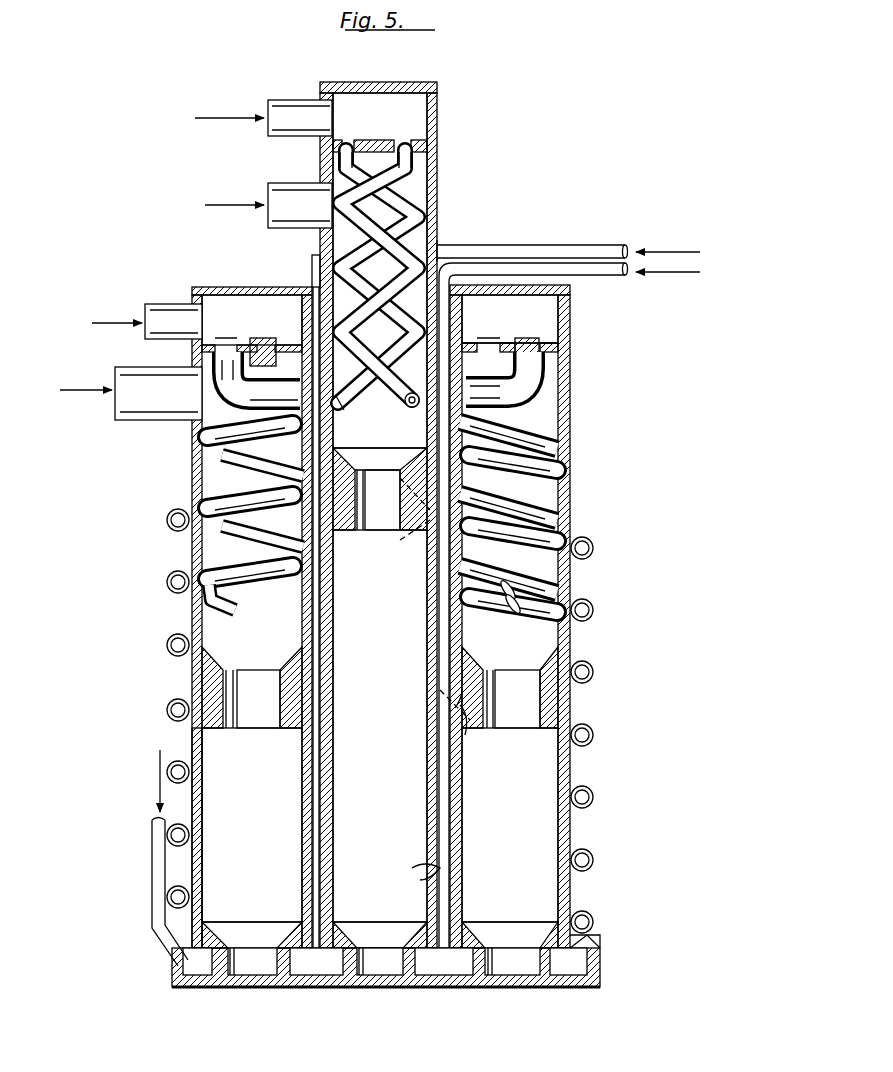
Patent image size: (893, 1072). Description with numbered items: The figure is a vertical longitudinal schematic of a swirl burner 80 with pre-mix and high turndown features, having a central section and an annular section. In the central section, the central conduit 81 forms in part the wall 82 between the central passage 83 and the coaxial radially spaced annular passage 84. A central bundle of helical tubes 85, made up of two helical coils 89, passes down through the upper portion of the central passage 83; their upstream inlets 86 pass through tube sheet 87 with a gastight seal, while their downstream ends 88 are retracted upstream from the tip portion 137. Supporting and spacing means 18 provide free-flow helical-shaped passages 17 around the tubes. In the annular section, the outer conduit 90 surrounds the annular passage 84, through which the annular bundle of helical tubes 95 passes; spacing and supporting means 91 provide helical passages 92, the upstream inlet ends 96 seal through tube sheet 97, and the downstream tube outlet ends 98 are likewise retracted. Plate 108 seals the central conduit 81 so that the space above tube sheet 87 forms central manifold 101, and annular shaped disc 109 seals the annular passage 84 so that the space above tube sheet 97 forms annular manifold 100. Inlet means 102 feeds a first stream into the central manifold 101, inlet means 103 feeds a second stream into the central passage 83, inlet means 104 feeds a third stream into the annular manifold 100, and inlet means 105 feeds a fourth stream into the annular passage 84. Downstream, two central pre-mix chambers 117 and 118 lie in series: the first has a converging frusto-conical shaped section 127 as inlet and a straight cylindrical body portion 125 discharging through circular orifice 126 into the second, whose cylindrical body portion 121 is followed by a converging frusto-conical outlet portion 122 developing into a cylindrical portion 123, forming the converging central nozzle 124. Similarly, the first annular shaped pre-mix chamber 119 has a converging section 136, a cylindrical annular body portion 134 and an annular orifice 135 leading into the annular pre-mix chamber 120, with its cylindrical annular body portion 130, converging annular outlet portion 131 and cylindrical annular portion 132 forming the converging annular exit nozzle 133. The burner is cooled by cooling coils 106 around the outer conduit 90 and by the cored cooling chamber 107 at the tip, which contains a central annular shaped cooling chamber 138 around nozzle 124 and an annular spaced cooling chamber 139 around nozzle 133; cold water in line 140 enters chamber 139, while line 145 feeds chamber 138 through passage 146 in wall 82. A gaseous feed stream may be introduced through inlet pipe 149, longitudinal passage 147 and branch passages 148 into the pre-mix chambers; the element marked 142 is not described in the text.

The free-flow helical-shaped passages 17 is at (430, 205).
The supporting and spacing means 18 is at (425, 170).
The burner 80 is at (570, 405).
The central conduit 81 is at (437, 235).
The wall 82 is at (427, 727).
The central passage 83 is at (398, 138).
The annular passage 84 is at (200, 425).
The central bundle of helical tubes 85 is at (340, 150).
The upstream inlets 86 is at (348, 138).
The tube sheet 87 is at (427, 150).
The downstream ends 88 is at (410, 410).
The helical coils 89 is at (345, 215).
The outer conduit 90 is at (192, 600).
The spacing and supporting means 91 is at (558, 475).
The free-flow helical passages 92 is at (570, 415).
The annular bundle of helical tubes 95 is at (200, 455).
The upstream inlet ends 96 is at (268, 338).
The tube sheet 97 is at (210, 350).
The downstream tube outlet ends 98 is at (240, 600).
The annular manifold 100 is at (228, 295).
The central manifold 101 is at (427, 108).
The inlet means 102 is at (280, 100).
The inlet means 103 is at (268, 195).
The inlet means 104 is at (162, 305).
The inlet means 105 is at (130, 367).
The cooling coils 106 is at (167, 710).
The cored cooling chamber 107 is at (592, 940).
The plate 108 is at (395, 90).
The annular shaped disc 109 is at (192, 287).
The first central pre-mix chamber 117 is at (380, 525).
The central pre-mix chamber 118 is at (395, 666).
The first annular shaped pre-mix chamber 119 is at (388, 699).
The annular shaped pre-mix chamber 120 is at (380, 825).
The coaxial cylindrical body portion 121 is at (320, 778).
The converging frusto-conical outlet portion 122 is at (437, 918).
The normal cylindrical portion 123 is at (380, 978).
The converging central nozzle 124 is at (343, 922).
The straight coaxial cylindrical body portion 125 is at (370, 540).
The circular orifice 126 is at (395, 570).
The converging frusto-conical shaped section 127 is at (382, 500).
The cylindrical annular body portion 130 is at (202, 845).
The converging frusto-conical shaped annular outlet portion 131 is at (222, 930).
The normal cylindrical annular portion 132 is at (250, 978).
The converging annular exit nozzle 133 is at (258, 922).
The cylindrical annular body portion 134 is at (242, 740).
The annular orifice 135 is at (283, 735).
The converging frusto-conical shaped section 136 is at (225, 655).
The tip portion 137 is at (180, 985).
The central annular shaped cooling chamber 138 is at (310, 978).
The annular spaced cooling chamber 139 is at (200, 975).
The line 140 is at (155, 778).
The base corner 142 is at (585, 941).
The line 145 is at (490, 245).
The passage 146 is at (320, 630).
The longitudinal passage 147 is at (437, 628).
The branch passage 148 is at (430, 580).
The inlet pipe 149 is at (612, 280).